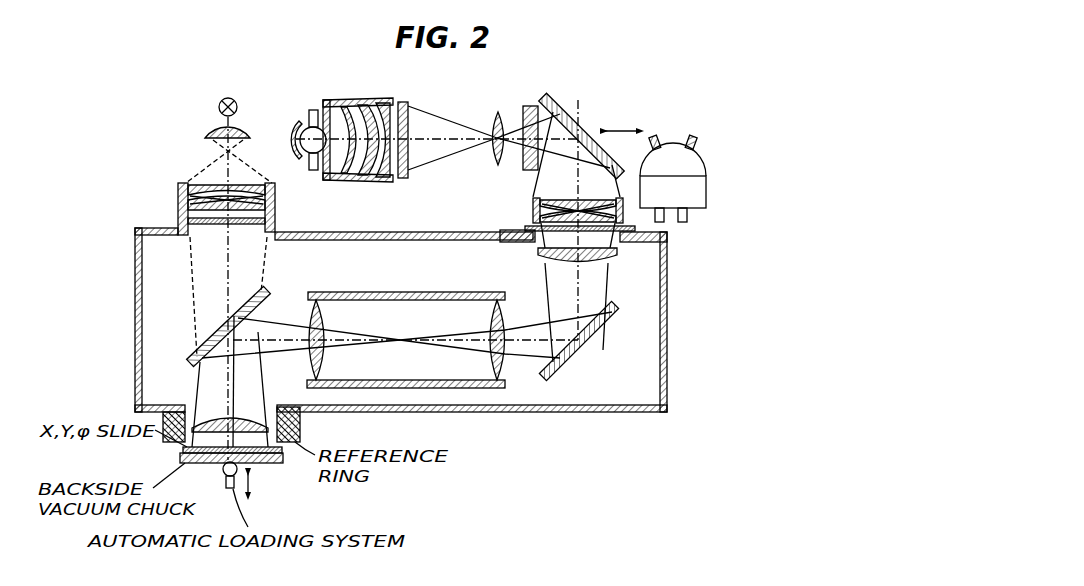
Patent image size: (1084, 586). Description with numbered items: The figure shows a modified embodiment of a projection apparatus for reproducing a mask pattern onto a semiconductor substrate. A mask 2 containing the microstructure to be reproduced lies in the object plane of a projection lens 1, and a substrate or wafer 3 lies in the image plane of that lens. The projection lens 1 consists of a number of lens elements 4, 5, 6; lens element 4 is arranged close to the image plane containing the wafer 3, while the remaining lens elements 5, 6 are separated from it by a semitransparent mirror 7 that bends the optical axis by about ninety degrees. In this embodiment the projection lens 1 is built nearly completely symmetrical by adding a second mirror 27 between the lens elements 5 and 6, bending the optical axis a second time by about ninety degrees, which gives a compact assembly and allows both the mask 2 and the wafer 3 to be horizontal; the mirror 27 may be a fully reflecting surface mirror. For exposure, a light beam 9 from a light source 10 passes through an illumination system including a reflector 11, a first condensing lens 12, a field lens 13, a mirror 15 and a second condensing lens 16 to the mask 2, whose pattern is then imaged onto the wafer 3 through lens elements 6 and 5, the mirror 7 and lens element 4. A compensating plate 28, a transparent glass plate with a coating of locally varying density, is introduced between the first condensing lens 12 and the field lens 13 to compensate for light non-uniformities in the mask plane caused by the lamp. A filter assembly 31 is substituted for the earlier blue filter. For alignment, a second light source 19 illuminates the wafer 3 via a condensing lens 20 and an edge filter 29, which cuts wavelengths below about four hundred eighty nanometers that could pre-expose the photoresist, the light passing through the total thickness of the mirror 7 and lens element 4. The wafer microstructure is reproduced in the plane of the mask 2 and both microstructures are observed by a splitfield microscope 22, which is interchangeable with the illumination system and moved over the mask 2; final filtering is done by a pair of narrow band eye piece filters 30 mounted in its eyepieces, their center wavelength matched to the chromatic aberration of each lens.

The projection lens 1 is at (503, 413).
The mask 2 is at (638, 229).
The wafer 3 is at (182, 450).
The lens element 4 is at (220, 419).
The lens element 5 is at (487, 386).
The lens element 6 is at (617, 252).
The semitransparent mirror 7 is at (197, 357).
The light beam 9 is at (432, 157).
The light source 10 is at (325, 60).
The reflector 11 is at (298, 118).
The first condensing lens 12 is at (345, 98).
The field lens 13 is at (493, 165).
The mirror 15 is at (572, 112).
The second condensing lens 16 is at (533, 213).
The light source 19 is at (218, 106).
The condensing lens 20 is at (212, 136).
The splitfield microscope 22 is at (690, 170).
The second mirror 27 is at (600, 358).
The compensating plate 28 is at (420, 92).
The edge filter 29 is at (186, 221).
The eye piece filters 30 is at (692, 135).
The filter assembly 31 is at (540, 104).